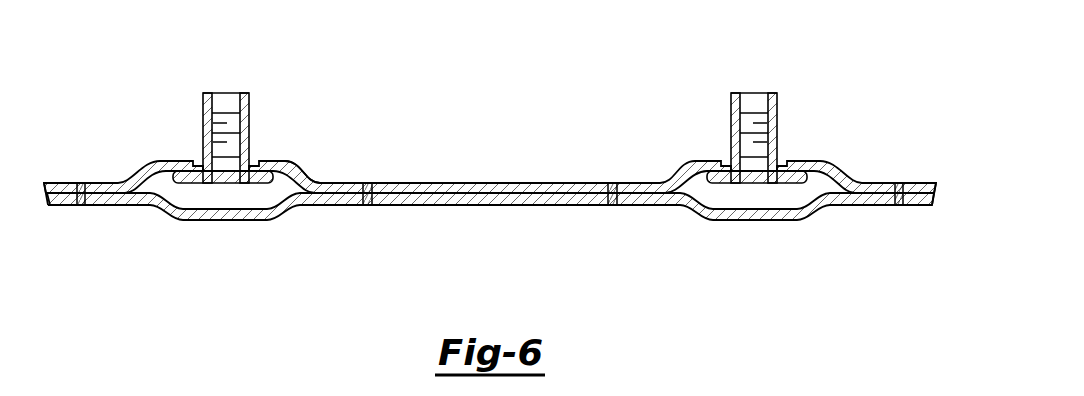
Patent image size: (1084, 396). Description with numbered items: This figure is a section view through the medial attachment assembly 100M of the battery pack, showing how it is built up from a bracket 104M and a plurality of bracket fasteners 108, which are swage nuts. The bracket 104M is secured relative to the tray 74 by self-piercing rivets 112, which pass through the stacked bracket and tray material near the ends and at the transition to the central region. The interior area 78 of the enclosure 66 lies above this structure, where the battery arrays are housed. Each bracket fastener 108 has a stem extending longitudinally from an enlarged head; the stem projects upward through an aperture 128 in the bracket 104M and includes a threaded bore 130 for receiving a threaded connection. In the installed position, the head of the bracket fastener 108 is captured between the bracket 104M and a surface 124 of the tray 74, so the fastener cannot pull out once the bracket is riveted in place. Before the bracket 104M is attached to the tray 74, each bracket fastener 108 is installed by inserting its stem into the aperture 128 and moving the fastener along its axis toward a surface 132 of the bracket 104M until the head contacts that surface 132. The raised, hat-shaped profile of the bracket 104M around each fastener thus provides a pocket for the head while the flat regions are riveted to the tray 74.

The medial attachment assembly 100M is at (823, 70).
The bracket 104M is at (923, 183).
The enclosure 66 is at (60, 198).
The tray 74 is at (923, 200).
The interior area 78 is at (499, 156).
The bracket fastener 108 is at (246, 100).
The self-piercing rivet 112 is at (100, 190).
The surface 124 is at (722, 180).
The aperture 128 is at (216, 178).
The threaded bore 130 is at (220, 100).
The surface 132 is at (291, 178).